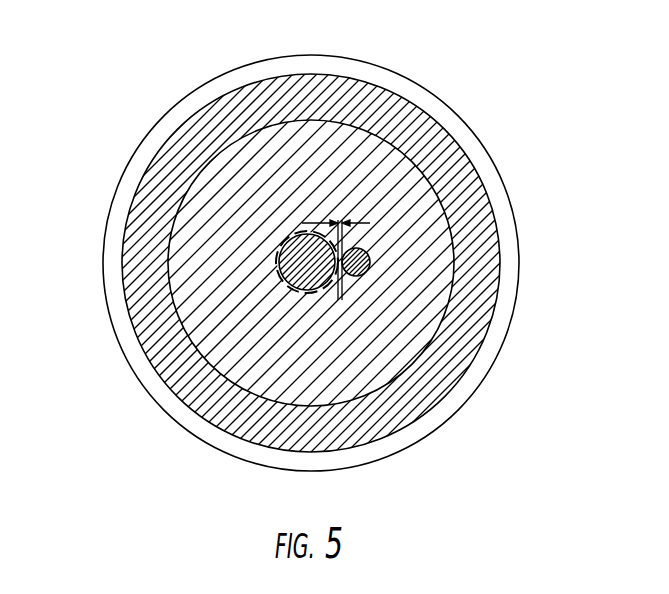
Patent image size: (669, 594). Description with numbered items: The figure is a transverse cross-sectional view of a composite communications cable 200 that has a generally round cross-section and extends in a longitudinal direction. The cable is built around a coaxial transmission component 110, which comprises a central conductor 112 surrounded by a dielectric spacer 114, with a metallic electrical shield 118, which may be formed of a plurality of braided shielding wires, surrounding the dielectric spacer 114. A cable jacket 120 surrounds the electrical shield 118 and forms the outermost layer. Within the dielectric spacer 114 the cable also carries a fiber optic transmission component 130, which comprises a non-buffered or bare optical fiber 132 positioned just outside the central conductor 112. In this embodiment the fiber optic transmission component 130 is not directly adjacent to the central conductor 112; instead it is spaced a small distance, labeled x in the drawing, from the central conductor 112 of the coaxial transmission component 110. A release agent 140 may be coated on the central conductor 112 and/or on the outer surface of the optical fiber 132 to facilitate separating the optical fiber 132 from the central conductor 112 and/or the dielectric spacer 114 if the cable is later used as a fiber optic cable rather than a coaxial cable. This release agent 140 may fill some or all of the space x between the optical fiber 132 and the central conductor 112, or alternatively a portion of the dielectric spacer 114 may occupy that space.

The composite communications cable 200 is at (173, 53).
The coaxial transmission component 110 is at (334, 297).
The central conductor 112 is at (302, 294).
The dielectric spacer 114 is at (362, 157).
The electrical shield 118 is at (473, 266).
The cable jacket 120 is at (493, 186).
The fiber optic transmission component 130 is at (319, 297).
The optical fiber 132 is at (347, 273).
The release agent 140 is at (287, 245).